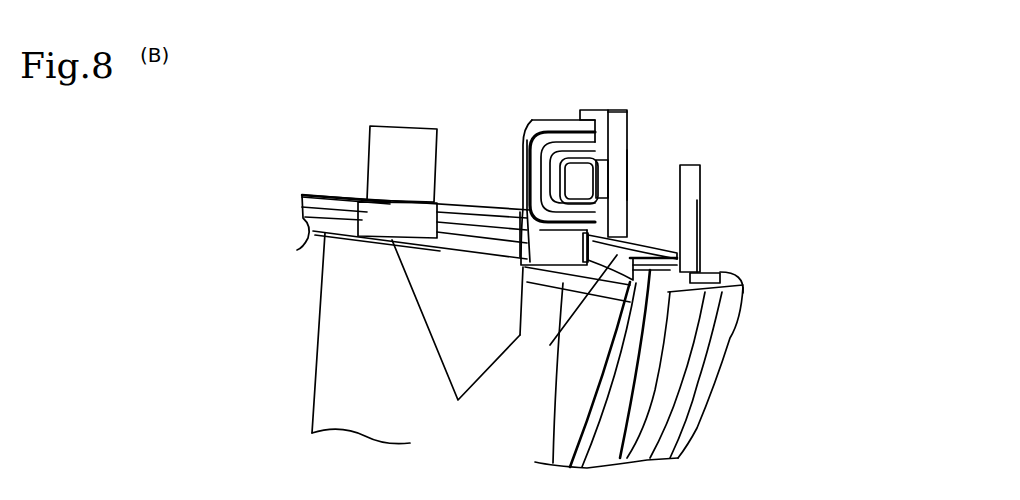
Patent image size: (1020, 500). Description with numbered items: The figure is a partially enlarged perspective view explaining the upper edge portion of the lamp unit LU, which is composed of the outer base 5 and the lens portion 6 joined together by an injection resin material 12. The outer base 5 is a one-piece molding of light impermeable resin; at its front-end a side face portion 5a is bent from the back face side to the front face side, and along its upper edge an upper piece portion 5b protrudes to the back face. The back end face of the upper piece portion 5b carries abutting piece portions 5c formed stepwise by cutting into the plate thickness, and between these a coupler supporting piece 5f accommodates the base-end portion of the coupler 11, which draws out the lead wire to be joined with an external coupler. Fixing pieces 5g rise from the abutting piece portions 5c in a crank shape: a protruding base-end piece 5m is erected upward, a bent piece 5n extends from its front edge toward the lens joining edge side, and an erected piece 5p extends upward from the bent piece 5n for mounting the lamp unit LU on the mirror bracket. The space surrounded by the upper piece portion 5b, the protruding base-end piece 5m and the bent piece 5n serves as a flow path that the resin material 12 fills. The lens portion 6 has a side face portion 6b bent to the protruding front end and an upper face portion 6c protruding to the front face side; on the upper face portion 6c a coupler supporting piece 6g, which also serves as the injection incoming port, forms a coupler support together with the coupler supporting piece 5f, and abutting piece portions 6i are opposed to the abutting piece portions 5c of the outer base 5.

The outer base 5 is at (343, 285).
The side face portion 5a is at (585, 373).
The upper piece portion 5b is at (468, 245).
The abutting piece portions 5c is at (615, 245).
The coupler supporting piece 5f is at (547, 122).
The fixing pieces 5g is at (690, 207).
The protruding base-end piece 5m is at (630, 241).
The bent piece 5n is at (660, 268).
The erected piece 5p is at (690, 230).
The lens portion 6 is at (750, 312).
The side face portion 6b is at (707, 362).
The upper face portion 6c is at (730, 280).
The coupler supporting piece 6g is at (620, 127).
The abutting piece portions 6i is at (638, 242).
The coupler 11 is at (630, 160).
The injection resin material 12 is at (342, 205).
The lamp unit LU is at (777, 150).